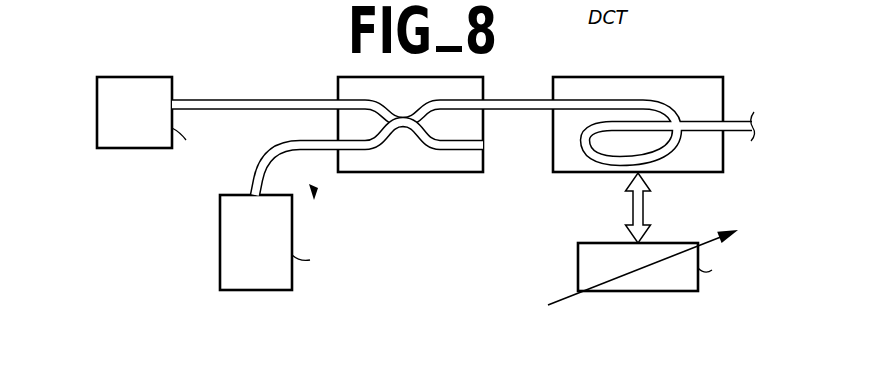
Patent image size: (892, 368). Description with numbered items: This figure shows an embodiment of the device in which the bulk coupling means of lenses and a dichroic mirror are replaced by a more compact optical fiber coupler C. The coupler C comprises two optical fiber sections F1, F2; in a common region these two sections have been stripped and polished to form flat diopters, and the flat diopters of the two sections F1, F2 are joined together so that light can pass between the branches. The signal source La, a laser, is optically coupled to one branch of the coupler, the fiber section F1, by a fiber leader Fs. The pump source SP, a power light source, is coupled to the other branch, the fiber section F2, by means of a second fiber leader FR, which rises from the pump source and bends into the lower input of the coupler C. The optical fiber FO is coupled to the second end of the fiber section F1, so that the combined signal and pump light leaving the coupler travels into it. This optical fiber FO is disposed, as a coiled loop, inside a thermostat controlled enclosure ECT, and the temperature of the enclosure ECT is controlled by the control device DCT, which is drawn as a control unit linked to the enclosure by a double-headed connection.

The signal source La is at (136, 148).
The fiber leader Fs is at (213, 99).
The optical fiber section F1 is at (353, 100).
The optical fiber section F2 is at (363, 172).
The second fiber leader FR is at (267, 168).
The coupler C is at (428, 172).
The optical fiber FO is at (627, 100).
The thermostat controlled enclosure ECT is at (683, 172).
The control device DCT is at (578, 252).
The pump source SP is at (220, 250).